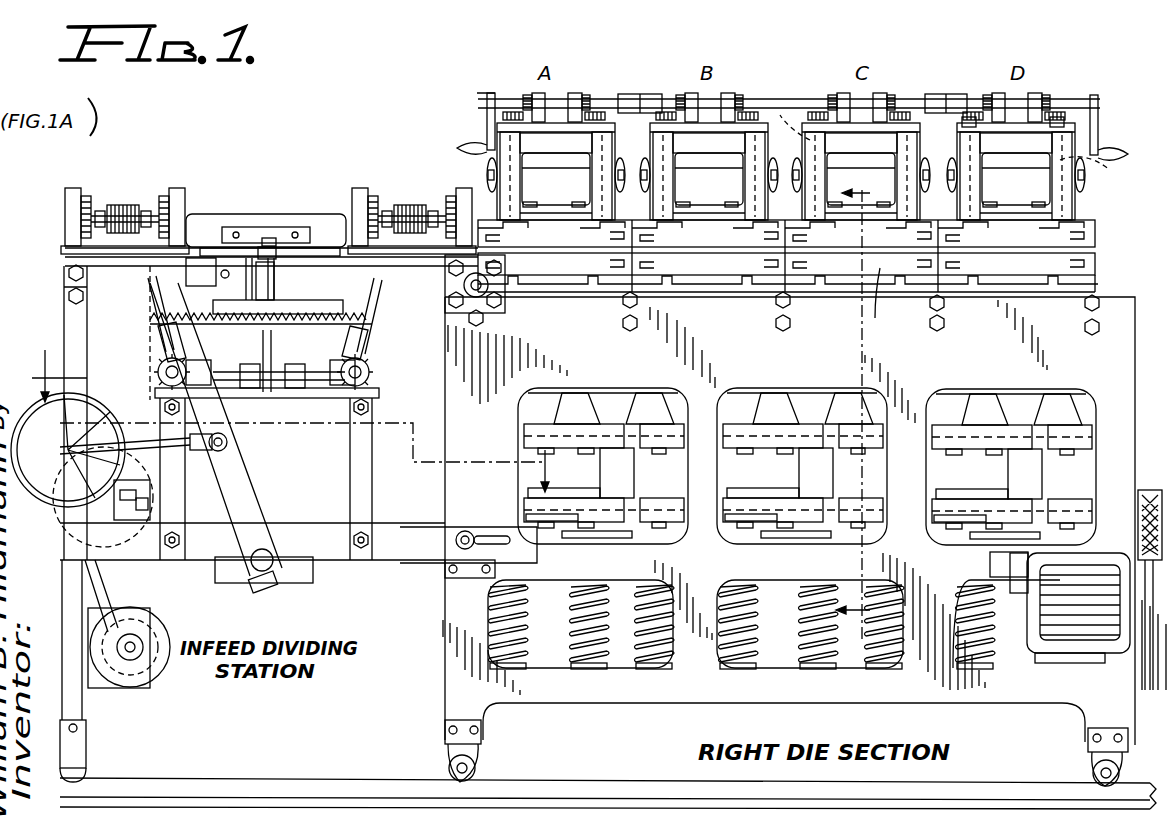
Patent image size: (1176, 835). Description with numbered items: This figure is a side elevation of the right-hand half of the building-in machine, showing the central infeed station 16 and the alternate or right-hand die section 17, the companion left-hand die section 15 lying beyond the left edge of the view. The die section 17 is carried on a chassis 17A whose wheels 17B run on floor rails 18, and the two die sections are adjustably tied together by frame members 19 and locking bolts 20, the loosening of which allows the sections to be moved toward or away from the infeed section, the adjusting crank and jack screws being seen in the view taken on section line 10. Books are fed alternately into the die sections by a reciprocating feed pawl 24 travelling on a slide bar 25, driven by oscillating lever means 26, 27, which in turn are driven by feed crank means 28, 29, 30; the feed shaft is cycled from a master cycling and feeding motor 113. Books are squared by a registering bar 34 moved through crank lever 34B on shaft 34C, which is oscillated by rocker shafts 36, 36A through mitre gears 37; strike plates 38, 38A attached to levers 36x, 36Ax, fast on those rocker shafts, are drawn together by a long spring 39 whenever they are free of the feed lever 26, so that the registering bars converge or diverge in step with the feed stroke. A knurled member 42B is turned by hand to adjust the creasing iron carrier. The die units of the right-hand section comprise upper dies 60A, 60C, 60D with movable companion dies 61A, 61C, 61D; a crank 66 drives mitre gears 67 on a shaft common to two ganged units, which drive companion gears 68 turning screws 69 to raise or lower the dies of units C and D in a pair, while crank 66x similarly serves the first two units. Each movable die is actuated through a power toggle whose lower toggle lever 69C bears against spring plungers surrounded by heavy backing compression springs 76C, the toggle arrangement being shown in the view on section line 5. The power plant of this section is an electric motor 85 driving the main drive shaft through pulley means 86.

The section line 5- 5 is at (860, 408).
The section line 10- 10 is at (306, 420).
The left-hand die section 15 is at (100, 118).
The infeed station 16 is at (278, 158).
The right-hand die section 17 is at (428, 144).
The chassis 17A is at (756, 342).
The wheels 17B is at (478, 770).
The floor rails 18 is at (335, 778).
The frame members 19 is at (410, 564).
The locking bolts 20 is at (465, 530).
The reciprocating feed pawl 24 is at (187, 217).
The slide bar 25 is at (246, 276).
The oscillating lever means 26 is at (221, 416).
The oscillating lever means 27 is at (195, 299).
The feed crank means 28 is at (243, 475).
The feed crank means 29 is at (141, 445).
The feed crank means 30 is at (83, 410).
The registering bar 34 is at (293, 229).
The crank lever 34B is at (254, 296).
The shaft 34C is at (305, 370).
The rocker shaft 36 is at (373, 368).
The rocker shaft 36A is at (160, 335).
The lever 36Ax is at (165, 320).
The lever 36x is at (370, 338).
The mitre gears 37 is at (150, 372).
The strike plate 38 is at (372, 300).
The strike plate 38A is at (160, 288).
The long spring 39 is at (240, 330).
The knurled member 42B is at (408, 208).
The upper die 60A is at (540, 232).
The upper die member 60C is at (845, 245).
The upper die 60D is at (1060, 240).
The movable companion die element 61A is at (575, 268).
The movable die member 61C is at (894, 304).
The movable die 61D is at (1066, 270).
The crank 66 is at (1110, 152).
The crank 66x is at (460, 140).
The mitre gears 67 is at (815, 101).
The companion gears 68 is at (966, 119).
The screws 69 is at (960, 144).
The lower toggle lever 69C is at (870, 494).
The heavy backing compression spring 76C is at (857, 640).
The electric motor 85 is at (1090, 609).
The pulley means 86 is at (1148, 480).
The master cycling and feeding motor 113 is at (165, 632).